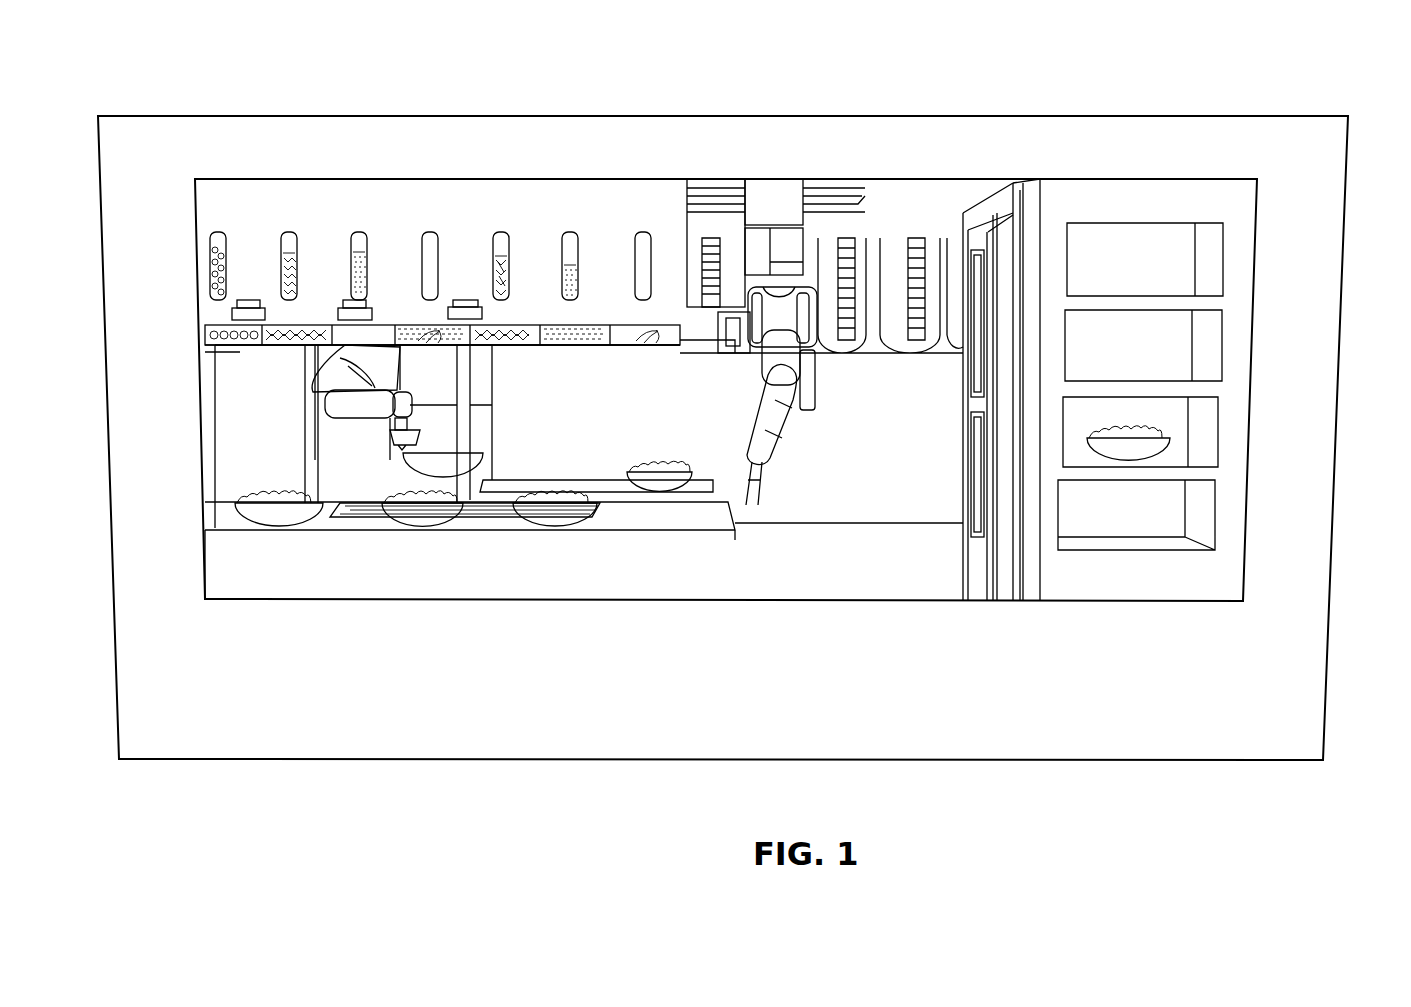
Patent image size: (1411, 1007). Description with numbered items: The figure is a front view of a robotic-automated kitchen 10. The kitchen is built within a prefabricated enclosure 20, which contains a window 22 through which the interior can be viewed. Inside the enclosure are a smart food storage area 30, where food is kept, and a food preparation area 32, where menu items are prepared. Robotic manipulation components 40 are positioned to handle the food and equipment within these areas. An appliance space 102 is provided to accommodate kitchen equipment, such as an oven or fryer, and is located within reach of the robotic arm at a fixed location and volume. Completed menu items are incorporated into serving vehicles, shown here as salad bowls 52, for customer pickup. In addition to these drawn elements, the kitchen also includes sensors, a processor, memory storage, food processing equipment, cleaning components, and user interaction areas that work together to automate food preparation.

The robotic-automated kitchen 10 is at (203, 66).
The prefabricated enclosure 20 is at (1323, 688).
The window 22 is at (215, 397).
The smart food storage area 30 is at (1003, 240).
The food preparation area 32 is at (693, 540).
The robotic manipulation components 40 is at (792, 425).
The salad bowls 52 is at (1155, 452).
The appliance space 102 is at (588, 432).